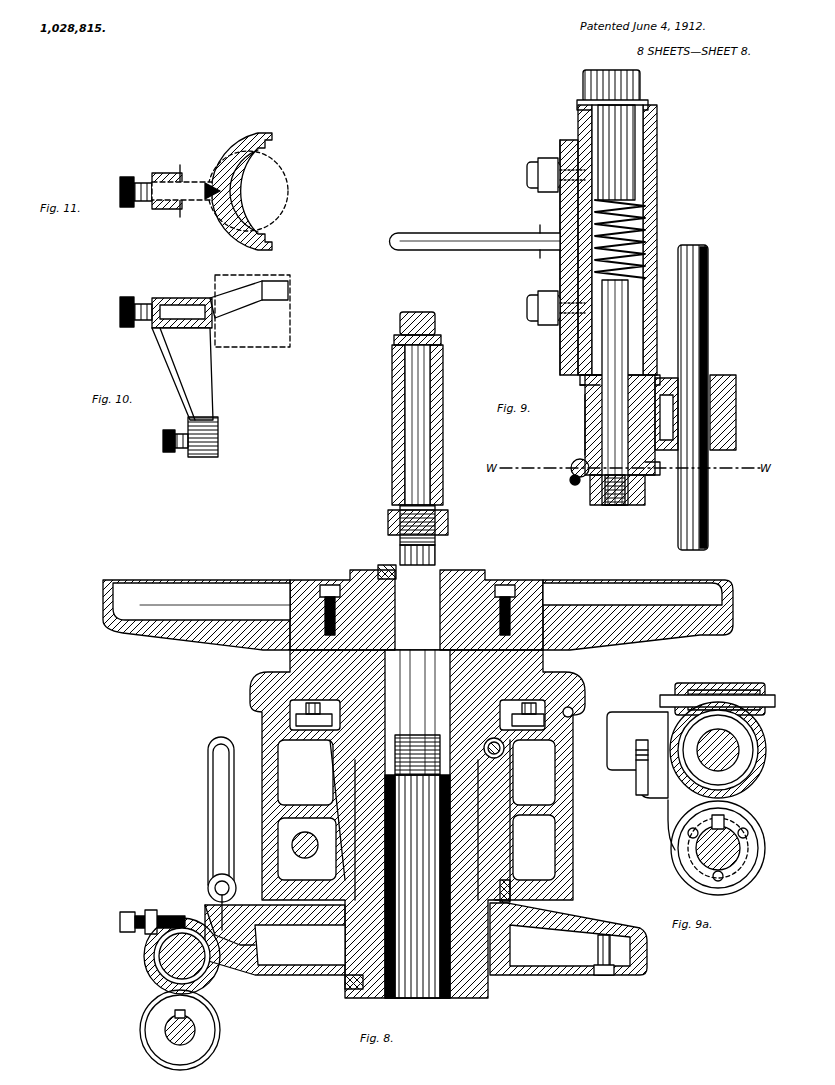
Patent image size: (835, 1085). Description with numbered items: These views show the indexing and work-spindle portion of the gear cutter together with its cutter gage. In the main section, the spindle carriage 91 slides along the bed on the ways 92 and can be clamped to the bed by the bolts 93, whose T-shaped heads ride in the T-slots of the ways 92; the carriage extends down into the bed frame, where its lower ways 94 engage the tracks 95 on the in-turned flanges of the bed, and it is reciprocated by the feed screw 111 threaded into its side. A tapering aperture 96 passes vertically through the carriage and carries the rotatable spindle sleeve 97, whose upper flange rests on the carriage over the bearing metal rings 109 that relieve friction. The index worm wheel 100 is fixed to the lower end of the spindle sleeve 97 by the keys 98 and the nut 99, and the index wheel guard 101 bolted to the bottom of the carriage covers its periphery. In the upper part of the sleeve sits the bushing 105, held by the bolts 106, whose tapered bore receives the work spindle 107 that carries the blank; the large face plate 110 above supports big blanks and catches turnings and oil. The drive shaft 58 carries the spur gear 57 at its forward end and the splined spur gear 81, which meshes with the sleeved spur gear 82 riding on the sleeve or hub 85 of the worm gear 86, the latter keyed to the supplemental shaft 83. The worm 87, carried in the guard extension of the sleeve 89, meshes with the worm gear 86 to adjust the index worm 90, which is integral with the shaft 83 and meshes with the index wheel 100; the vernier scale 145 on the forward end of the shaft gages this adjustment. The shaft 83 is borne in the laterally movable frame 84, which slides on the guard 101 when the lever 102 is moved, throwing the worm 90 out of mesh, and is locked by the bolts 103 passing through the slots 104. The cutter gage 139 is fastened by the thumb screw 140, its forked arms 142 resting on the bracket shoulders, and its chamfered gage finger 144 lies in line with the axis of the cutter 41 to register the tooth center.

In FIG. 11, the cutter 41 is at (248, 191).
In FIG. 10, the cutter 41 is at (250, 311).
In FIG. 9A, the spur gear 57 is at (730, 690).
In FIG. 8, the spur gear 57 is at (318, 845).
In FIG. 9, the shaft 58 is at (708, 300).
In FIG. 9A, the shaft 58 is at (740, 850).
In FIG. 8, the shaft 58 is at (195, 1030).
In FIG. 9, the spur gear 81 is at (736, 380).
In FIG. 9, the sleeved spur gear 82 is at (580, 380).
In FIG. 9, the supplemental shaft 83 is at (635, 178).
In FIG. 9, the laterally movable frame 84 is at (560, 340).
In FIG. 9A, the laterally movable frame 84 is at (766, 738).
In FIG. 8, the laterally movable frame 84 is at (160, 912).
In FIG. 9, the sleeve or hub 85 is at (585, 432).
In FIG. 9A, the sleeve or hub 85 is at (718, 771).
In FIG. 8, the sleeve or hub 85 is at (160, 975).
In FIG. 9, the worm gear 86 is at (655, 475).
In FIG. 9A, the worm gear 86 is at (753, 750).
In FIG. 9, the worm 87 is at (570, 482).
In FIG. 9, the sleeve 89 is at (585, 415).
In FIG. 9, the index worm 90 is at (645, 222).
In FIG. 8, the index worm 90 is at (145, 956).
In FIG. 8, the spindle carriage 91 is at (585, 690).
In FIG. 8, the ways 92 is at (573, 715).
In FIG. 8, the bolts 93 is at (420, 715).
In FIG. 8, the ways 94 is at (505, 882).
In FIG. 8, the tracks 95 is at (510, 900).
In FIG. 8, the tapering aperture 96 is at (478, 790).
In FIG. 8, the spindle sleeve 97 is at (478, 850).
In FIG. 8, the keys 98 is at (340, 975).
In FIG. 8, the nut 99 is at (352, 989).
In FIG. 8, the index worm wheel 100 is at (598, 960).
In FIG. 8, the index wheel guard 101 is at (600, 908).
In FIG. 9, the lever 102 is at (445, 232).
In FIG. 8, the lever 102 is at (208, 815).
In FIG. 8, the bolts 103 is at (212, 880).
In FIG. 8, the slots 104 is at (232, 880).
In FIG. 8, the bushing 105 is at (385, 565).
In FIG. 8, the bolts 106 is at (330, 585).
In FIG. 8, the work spindle 107 is at (436, 552).
In FIG. 8, the bearing metal rings 109 is at (545, 652).
In FIG. 8, the face plate 110 is at (100, 603).
In FIG. 8, the feed screw 111 is at (505, 750).
In FIG. 10, the cutter gage 139 is at (210, 400).
In FIG. 10, the thumb screw 140 is at (178, 455).
In FIG. 11, the forked arms 142 is at (274, 136).
In FIG. 11, the gage finger 144 is at (140, 182).
In FIG. 10, the gage finger 144 is at (140, 302).
In FIG. 9, the vernier scale 145 is at (650, 100).